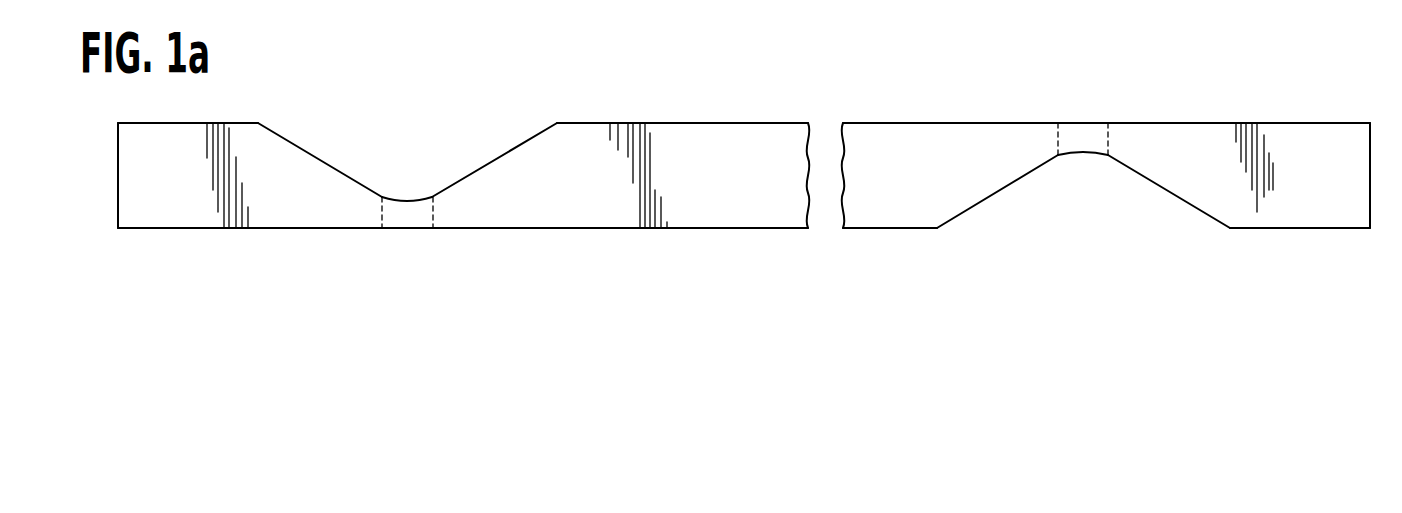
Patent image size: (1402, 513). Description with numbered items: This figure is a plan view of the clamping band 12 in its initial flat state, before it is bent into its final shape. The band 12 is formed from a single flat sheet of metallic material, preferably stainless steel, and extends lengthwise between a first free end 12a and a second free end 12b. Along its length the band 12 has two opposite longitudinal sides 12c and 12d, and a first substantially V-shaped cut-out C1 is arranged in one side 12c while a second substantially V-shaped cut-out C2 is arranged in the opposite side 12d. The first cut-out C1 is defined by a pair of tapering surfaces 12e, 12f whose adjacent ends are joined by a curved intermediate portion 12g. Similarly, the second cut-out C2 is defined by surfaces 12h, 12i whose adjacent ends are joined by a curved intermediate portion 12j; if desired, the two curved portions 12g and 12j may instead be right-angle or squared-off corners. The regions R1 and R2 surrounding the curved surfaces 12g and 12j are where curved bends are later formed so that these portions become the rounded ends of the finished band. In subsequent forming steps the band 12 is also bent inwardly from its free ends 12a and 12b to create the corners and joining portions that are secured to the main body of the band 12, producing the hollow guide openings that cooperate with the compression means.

The elongated band 12 is at (593, 293).
The free end 12a is at (172, 200).
The free end 12b is at (1343, 202).
The longitudinal side 12c is at (704, 123).
The longitudinal side 12d is at (748, 228).
The tapering surface 12e is at (319, 155).
The tapering surface 12f is at (494, 158).
The curved intermediate portion 12g is at (408, 200).
The surface 12h is at (1170, 197).
The surface 12i is at (995, 197).
The curved intermediate portion 12j is at (1085, 157).
The first V-shaped cut-out C1 is at (350, 90).
The second V-shaped cut-out C2 is at (1036, 225).
The region R1 is at (416, 252).
The region R2 is at (1088, 100).